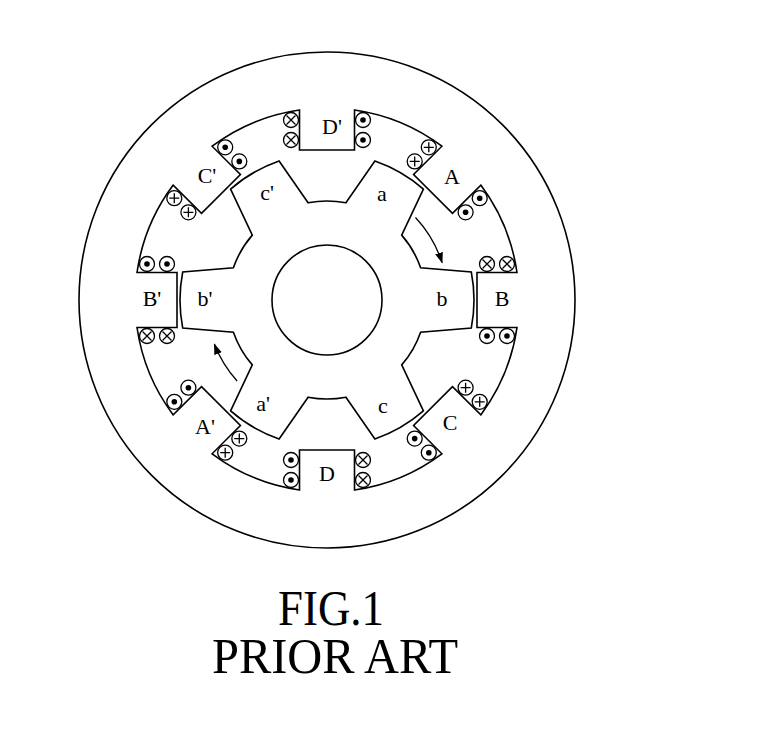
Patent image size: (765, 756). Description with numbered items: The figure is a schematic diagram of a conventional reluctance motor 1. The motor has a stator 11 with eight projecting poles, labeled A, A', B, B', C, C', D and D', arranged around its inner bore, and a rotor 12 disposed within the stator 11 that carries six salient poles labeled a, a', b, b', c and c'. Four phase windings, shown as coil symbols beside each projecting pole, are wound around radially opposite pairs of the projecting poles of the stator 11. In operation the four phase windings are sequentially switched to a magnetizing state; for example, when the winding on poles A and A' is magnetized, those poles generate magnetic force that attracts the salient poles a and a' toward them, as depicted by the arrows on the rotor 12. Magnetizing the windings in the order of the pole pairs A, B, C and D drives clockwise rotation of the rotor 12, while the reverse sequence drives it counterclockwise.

The reluctance motor 1 is at (544, 131).
The stator 11 is at (537, 223).
The rotor 12 is at (393, 330).